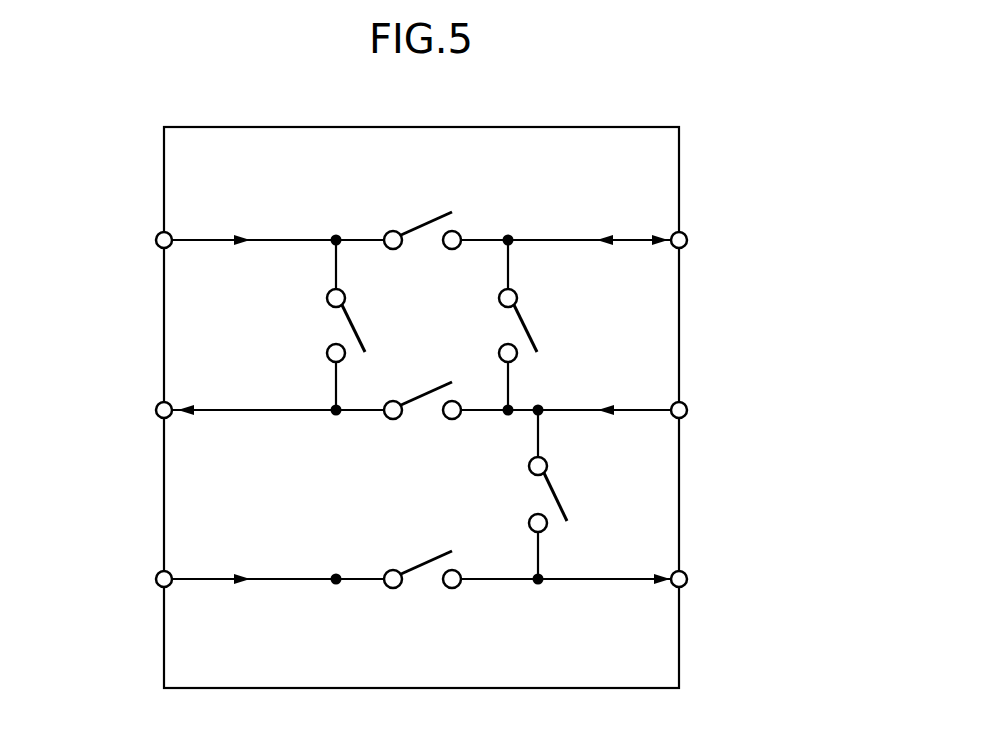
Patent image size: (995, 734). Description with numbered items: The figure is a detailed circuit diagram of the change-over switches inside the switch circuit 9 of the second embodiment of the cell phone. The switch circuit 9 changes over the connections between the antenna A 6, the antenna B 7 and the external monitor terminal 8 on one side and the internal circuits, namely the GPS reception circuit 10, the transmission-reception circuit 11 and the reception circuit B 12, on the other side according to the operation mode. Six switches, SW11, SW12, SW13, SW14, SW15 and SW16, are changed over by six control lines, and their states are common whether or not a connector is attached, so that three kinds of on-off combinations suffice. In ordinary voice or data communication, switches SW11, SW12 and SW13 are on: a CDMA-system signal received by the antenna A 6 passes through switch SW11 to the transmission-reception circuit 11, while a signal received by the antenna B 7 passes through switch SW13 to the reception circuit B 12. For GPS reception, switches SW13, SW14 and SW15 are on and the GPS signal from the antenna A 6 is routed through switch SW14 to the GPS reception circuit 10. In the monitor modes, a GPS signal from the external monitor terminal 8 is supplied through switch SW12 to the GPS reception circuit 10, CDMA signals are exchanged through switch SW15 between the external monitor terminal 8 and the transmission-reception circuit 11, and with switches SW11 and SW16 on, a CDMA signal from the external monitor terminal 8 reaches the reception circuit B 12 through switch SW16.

The switch circuit 9 is at (505, 127).
The switch SW11 is at (422, 208).
The switch SW12 is at (422, 431).
The switch SW13 is at (422, 600).
The switch SW14 is at (298, 325).
The switch SW15 is at (553, 325).
The switch SW16 is at (582, 494).
The antenna A 6 is at (100, 238).
The antenna B 7 is at (100, 577).
The external monitor terminal 8 is at (758, 407).
The GPS reception circuit 10 is at (91, 408).
The transmission-reception circuit 11 is at (780, 237).
The reception circuit B 12 is at (760, 577).